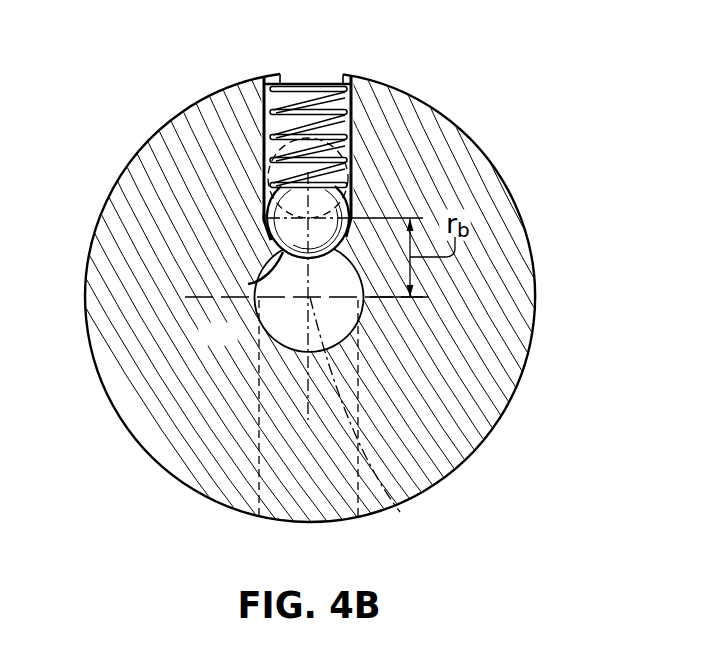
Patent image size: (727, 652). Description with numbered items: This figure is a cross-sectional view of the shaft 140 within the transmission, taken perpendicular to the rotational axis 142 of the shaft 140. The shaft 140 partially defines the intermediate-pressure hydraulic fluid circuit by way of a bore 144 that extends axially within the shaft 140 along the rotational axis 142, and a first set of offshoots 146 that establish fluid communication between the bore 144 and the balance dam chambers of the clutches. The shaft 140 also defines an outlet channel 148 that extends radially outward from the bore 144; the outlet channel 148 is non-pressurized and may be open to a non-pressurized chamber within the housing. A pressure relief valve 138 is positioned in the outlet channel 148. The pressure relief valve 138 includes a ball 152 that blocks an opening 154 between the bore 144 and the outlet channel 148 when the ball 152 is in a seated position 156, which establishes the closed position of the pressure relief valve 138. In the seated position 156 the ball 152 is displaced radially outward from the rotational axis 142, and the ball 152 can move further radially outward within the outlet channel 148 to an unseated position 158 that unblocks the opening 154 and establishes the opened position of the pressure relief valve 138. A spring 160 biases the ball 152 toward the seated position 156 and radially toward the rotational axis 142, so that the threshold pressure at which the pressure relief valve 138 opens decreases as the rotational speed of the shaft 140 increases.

The pressure relief valve 138 is at (250, 127).
The shaft 140 is at (500, 75).
The rotational axis 142 is at (402, 509).
The bore 144 is at (338, 310).
The first set of offshoots 146 is at (259, 458).
The outlet channel 148 is at (350, 97).
The ball 152 is at (353, 205).
The opening 154 is at (248, 284).
The seated position 156 is at (262, 219).
The unseated position 158 is at (272, 147).
The spring 160 is at (360, 110).